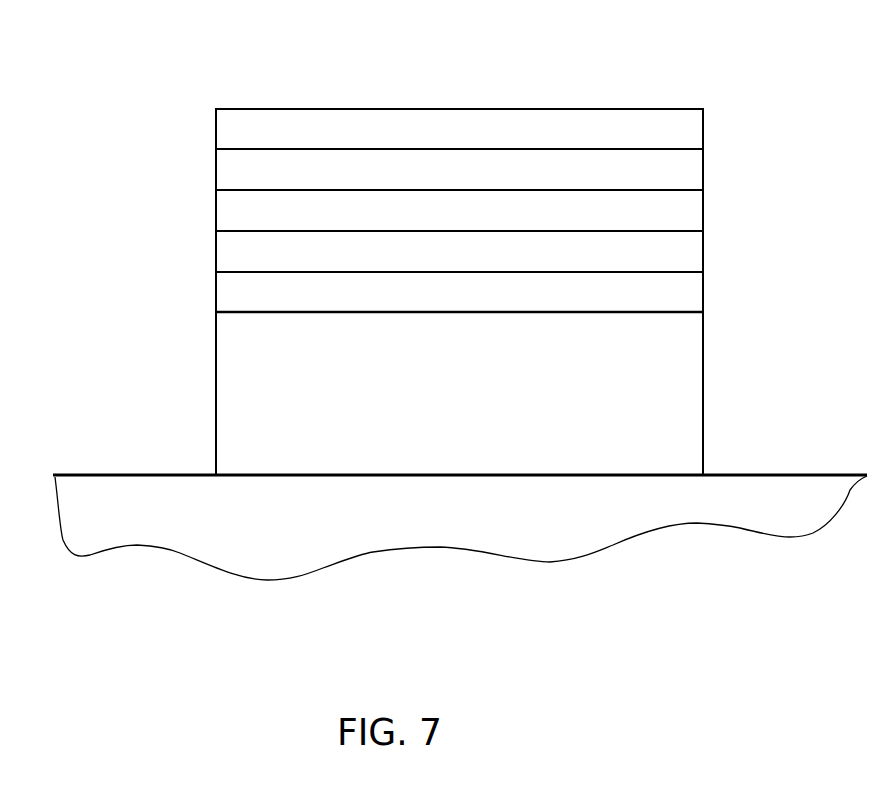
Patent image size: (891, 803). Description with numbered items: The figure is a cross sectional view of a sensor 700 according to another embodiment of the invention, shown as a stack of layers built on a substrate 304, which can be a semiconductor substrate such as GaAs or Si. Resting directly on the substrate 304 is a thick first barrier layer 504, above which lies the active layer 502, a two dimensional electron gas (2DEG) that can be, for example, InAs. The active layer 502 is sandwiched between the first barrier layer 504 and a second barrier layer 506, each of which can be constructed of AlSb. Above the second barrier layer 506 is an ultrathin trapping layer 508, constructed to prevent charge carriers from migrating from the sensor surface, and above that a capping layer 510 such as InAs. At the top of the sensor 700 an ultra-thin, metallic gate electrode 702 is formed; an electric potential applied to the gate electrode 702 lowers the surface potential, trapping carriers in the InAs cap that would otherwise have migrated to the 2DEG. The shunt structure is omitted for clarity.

The sensor 700 is at (216, 187).
The gate electrode 702 is at (418, 130).
The capping layer 510 is at (548, 173).
The trapping layer 508 is at (548, 214).
The second barrier layer 506 is at (548, 254).
The active layer 502 is at (548, 294).
The first barrier layer 504 is at (548, 394).
The substrate 304 is at (574, 505).